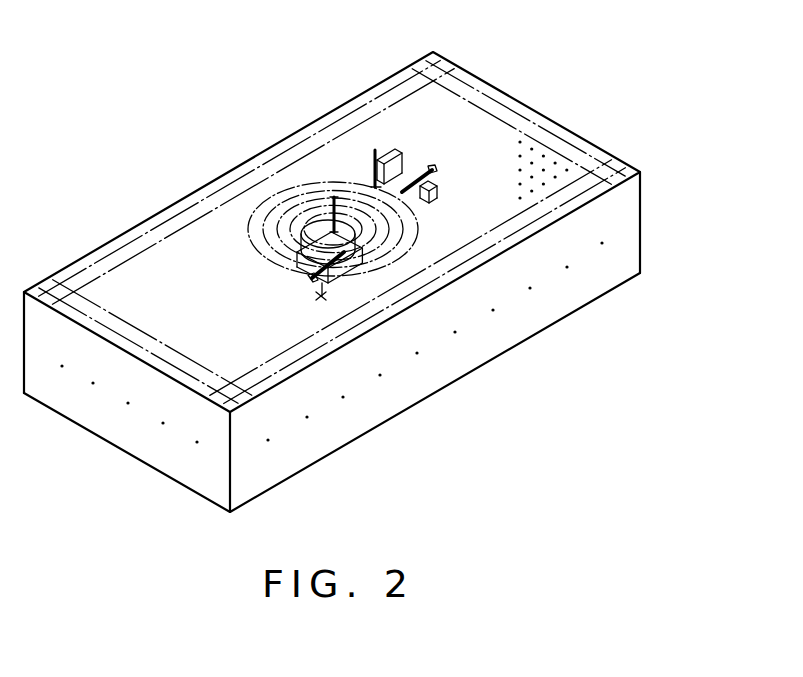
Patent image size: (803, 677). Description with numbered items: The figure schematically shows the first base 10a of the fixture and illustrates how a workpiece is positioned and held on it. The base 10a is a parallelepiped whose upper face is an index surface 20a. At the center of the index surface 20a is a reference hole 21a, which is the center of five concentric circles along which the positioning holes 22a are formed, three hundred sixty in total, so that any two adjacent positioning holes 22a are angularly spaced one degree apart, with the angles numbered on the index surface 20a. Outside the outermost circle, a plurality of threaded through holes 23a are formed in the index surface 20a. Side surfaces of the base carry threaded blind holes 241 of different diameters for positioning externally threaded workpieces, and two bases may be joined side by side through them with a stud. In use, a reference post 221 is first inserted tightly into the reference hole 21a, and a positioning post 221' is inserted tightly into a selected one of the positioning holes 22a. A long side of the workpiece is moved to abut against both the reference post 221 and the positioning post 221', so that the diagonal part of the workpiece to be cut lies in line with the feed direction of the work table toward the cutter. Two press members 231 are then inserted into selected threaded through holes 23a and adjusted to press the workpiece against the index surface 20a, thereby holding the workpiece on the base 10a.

The base 10a is at (475, 60).
The index surface 20a is at (467, 123).
The reference hole 21a is at (283, 217).
The positioning holes 22a is at (362, 183).
The reference post 221 is at (286, 153).
The positioning post 221' is at (374, 109).
The threaded through holes 23a is at (567, 140).
The press members 231 is at (432, 170).
The side face 241 is at (197, 443).